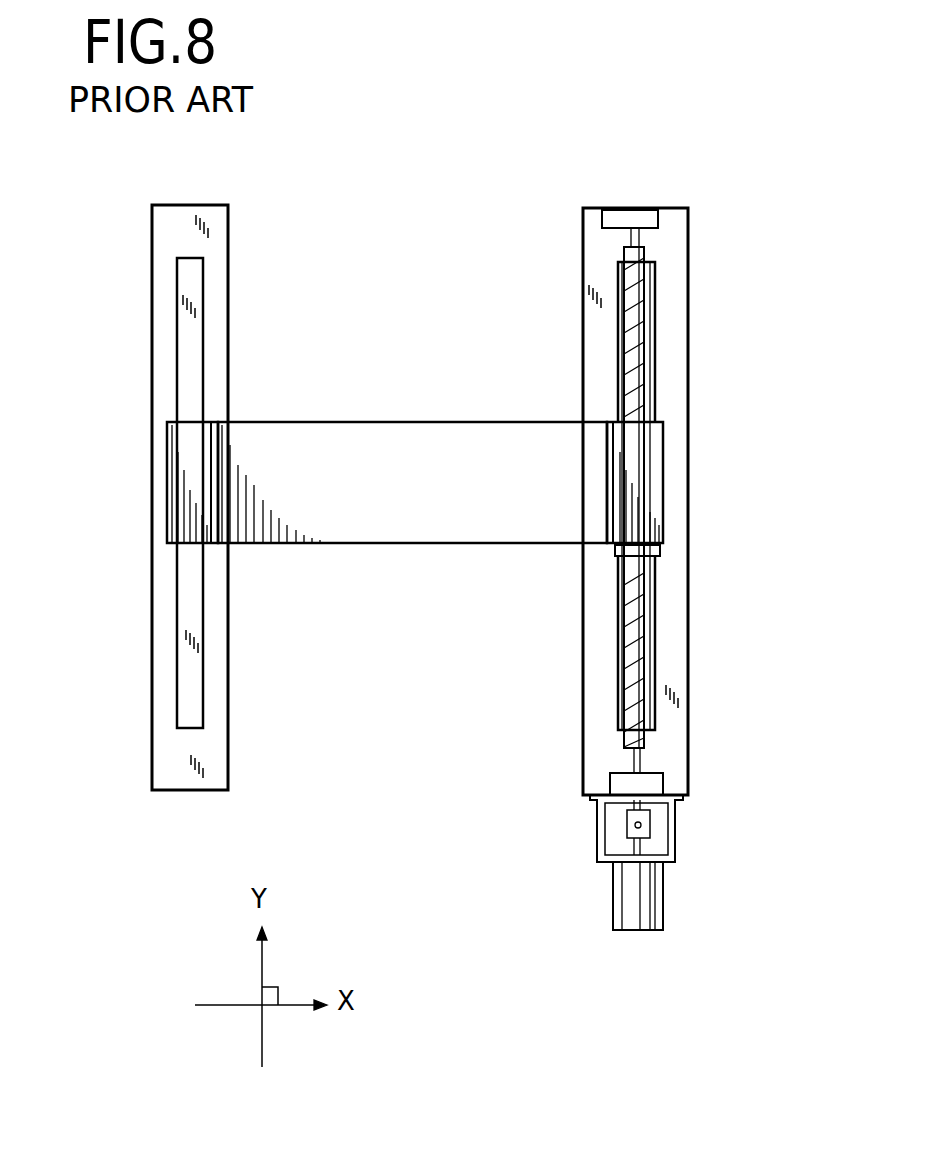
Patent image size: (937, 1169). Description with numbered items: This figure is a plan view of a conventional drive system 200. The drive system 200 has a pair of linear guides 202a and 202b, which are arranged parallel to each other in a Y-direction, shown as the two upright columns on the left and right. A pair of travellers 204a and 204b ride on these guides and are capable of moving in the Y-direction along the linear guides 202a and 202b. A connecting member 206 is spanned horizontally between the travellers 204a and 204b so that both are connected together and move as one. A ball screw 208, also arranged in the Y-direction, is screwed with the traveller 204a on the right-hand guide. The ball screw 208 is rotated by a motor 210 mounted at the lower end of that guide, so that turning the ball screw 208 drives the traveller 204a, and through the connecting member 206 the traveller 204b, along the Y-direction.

The conventional drive system 200 is at (494, 203).
The linear guide 202a is at (656, 318).
The linear guide 202b is at (178, 324).
The traveller 204a is at (647, 485).
The traveller 204b is at (196, 488).
The connecting member 206 is at (426, 527).
The ball screw 208 is at (633, 675).
The motor 210 is at (662, 931).